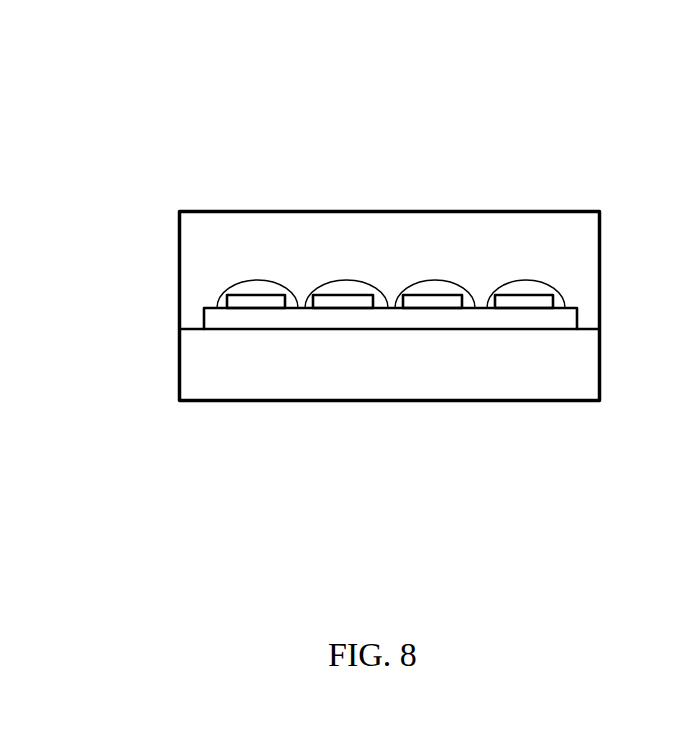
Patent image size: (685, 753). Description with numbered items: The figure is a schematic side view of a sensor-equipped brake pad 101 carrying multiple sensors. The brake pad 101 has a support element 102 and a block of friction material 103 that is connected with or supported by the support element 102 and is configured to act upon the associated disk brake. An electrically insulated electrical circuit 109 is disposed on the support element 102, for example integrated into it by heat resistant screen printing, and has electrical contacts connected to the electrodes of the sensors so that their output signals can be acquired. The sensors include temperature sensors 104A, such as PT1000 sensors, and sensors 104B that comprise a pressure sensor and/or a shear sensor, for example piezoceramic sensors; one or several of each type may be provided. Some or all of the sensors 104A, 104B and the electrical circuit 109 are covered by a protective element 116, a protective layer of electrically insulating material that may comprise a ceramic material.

The brake pad 101 is at (140, 281).
The support element 102 is at (242, 365).
The block of friction material 103 is at (287, 258).
The temperature sensor 104A is at (240, 294).
The pressure sensor 104B is at (367, 293).
The electrical circuit 109 is at (406, 318).
The protective element 116 is at (258, 282).